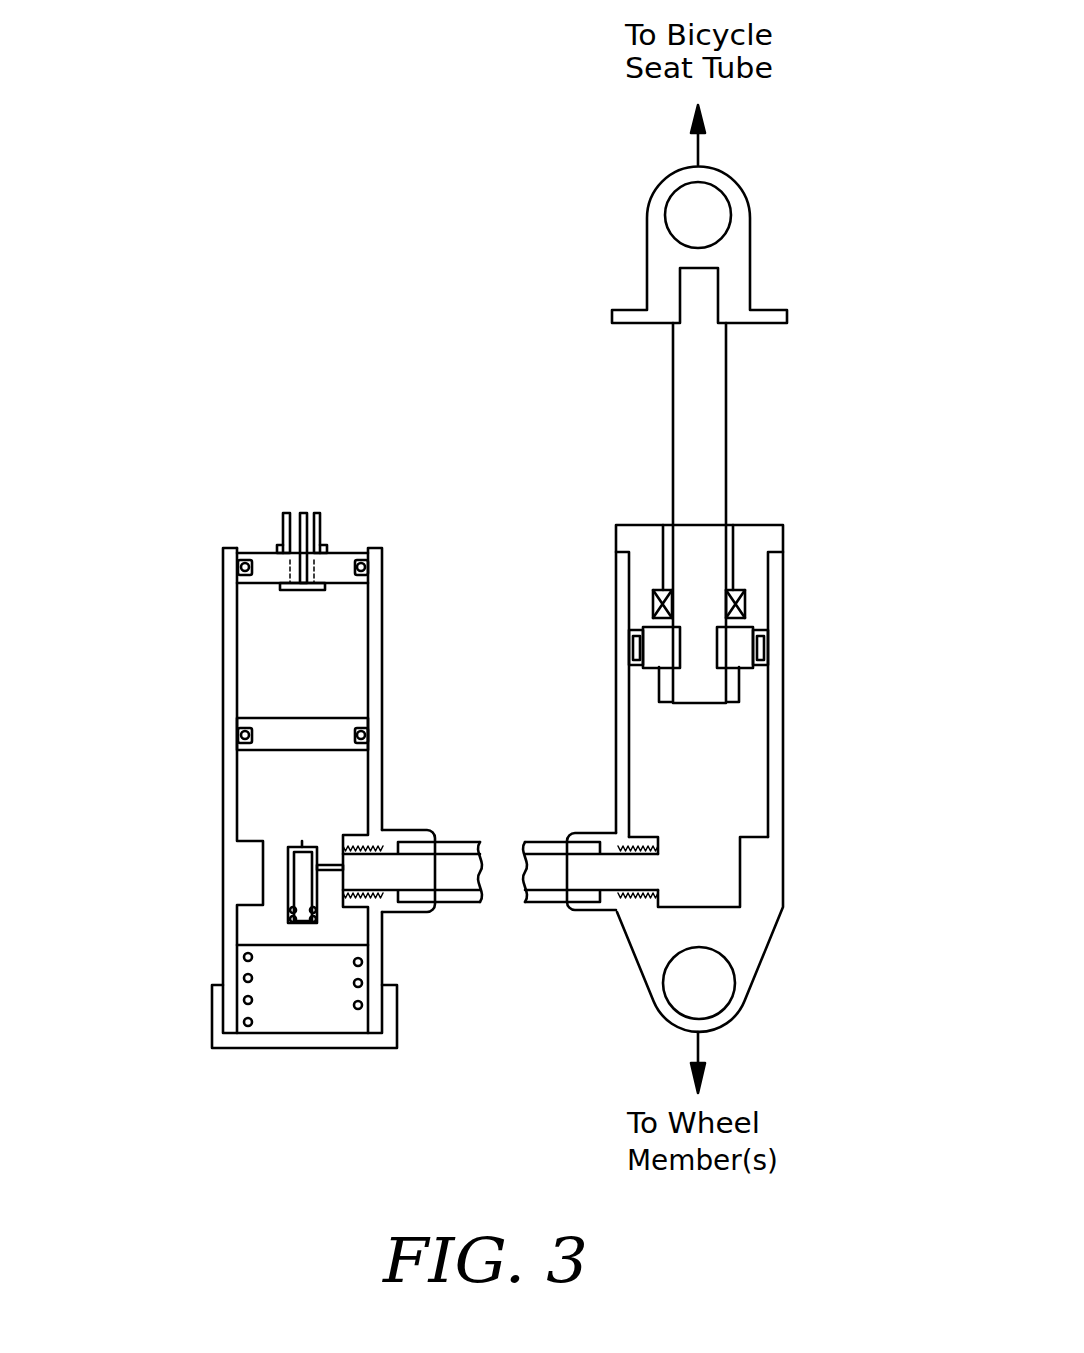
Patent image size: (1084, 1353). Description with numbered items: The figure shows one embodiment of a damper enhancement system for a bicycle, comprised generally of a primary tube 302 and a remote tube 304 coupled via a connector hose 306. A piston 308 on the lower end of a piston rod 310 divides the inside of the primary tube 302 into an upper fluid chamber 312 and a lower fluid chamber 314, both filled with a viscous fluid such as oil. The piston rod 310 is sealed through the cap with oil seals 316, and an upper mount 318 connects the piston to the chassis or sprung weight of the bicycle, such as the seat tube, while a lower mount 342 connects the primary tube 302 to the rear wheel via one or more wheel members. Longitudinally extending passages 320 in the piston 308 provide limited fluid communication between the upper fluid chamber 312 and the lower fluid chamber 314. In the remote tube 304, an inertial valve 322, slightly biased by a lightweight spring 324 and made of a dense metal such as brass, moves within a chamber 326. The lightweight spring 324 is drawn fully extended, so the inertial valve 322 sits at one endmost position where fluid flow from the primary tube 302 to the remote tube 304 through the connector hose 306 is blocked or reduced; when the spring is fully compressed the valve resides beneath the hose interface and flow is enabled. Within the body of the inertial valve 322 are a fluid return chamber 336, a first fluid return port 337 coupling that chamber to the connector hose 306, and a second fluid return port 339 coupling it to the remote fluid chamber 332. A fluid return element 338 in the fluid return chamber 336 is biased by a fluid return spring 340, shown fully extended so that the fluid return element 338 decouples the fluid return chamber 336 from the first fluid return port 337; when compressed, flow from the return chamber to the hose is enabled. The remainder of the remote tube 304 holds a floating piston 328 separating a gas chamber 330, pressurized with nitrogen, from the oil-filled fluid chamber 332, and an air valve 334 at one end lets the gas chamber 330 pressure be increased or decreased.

The primary tube 302 is at (785, 750).
The remote tube 304 is at (222, 723).
The connector hose 306 is at (556, 875).
The piston 308 is at (747, 650).
The piston rod 310 is at (712, 438).
The upper fluid chamber 312 is at (756, 563).
The lower fluid chamber 314 is at (735, 806).
The oil seals 316 is at (653, 605).
The upper mount 318 is at (712, 213).
The longitudinally extending passages 320 is at (643, 657).
The inertial valve 322 is at (252, 935).
The lightweight spring 324 is at (250, 1022).
The chamber 326 is at (322, 1020).
The floating piston 328 is at (337, 735).
The gas chamber 330 is at (260, 650).
The fluid chamber 332 is at (260, 800).
The air valve 334 is at (302, 513).
The fluid return chamber 336 is at (302, 880).
The first fluid return port 337 is at (330, 860).
The fluid return element 338 is at (318, 898).
The second fluid return port 339 is at (302, 845).
The fluid return spring 340 is at (318, 906).
The lower mount 342 is at (712, 983).